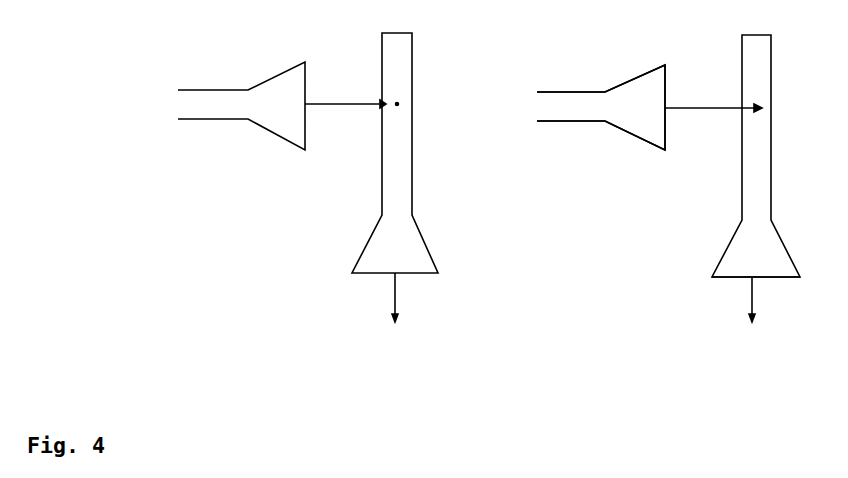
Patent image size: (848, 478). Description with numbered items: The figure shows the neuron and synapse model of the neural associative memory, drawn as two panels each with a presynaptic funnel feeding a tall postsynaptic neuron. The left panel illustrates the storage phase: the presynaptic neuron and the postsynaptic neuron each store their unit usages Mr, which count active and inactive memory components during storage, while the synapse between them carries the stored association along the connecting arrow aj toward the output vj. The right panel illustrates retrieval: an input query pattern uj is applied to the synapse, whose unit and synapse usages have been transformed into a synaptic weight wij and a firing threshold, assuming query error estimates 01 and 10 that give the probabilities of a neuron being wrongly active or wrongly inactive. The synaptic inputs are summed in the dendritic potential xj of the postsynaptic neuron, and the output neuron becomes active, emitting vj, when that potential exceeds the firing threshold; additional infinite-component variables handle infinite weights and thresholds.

The unit usage Mr is at (308, 153).
The axon signal a_j^u aj is at (352, 96).
The output neuron activity vj is at (579, 304).
The error probability estimate e01 01 is at (619, 107).
The error probability estimate e10 10 is at (619, 112).
The input query pattern uj is at (713, 98).
The synaptic weight wij is at (756, 156).
The dendritic potential xj is at (756, 276).